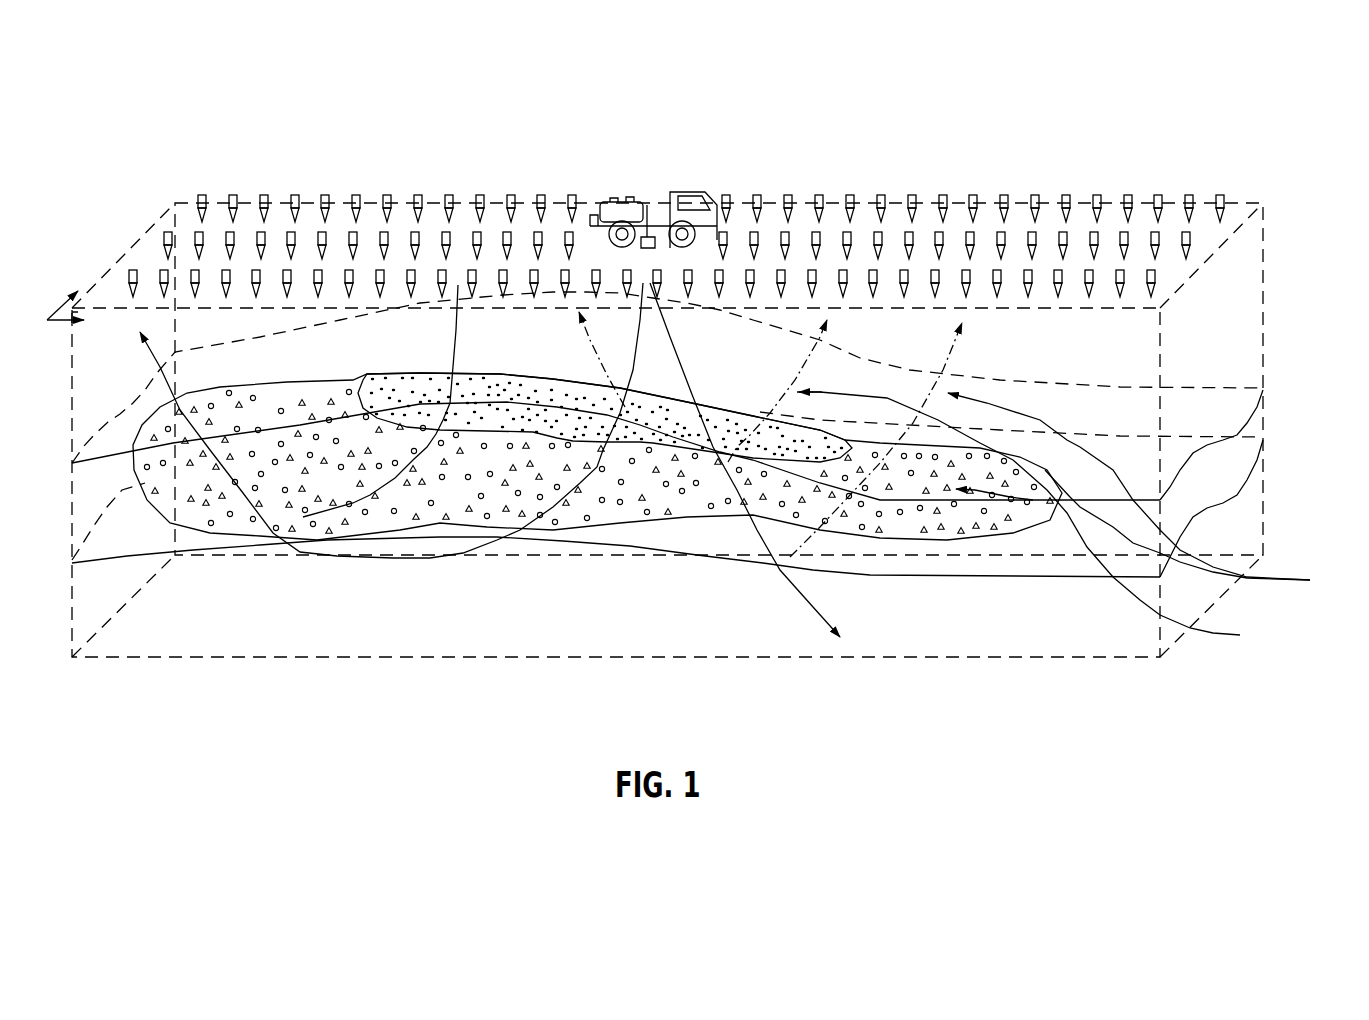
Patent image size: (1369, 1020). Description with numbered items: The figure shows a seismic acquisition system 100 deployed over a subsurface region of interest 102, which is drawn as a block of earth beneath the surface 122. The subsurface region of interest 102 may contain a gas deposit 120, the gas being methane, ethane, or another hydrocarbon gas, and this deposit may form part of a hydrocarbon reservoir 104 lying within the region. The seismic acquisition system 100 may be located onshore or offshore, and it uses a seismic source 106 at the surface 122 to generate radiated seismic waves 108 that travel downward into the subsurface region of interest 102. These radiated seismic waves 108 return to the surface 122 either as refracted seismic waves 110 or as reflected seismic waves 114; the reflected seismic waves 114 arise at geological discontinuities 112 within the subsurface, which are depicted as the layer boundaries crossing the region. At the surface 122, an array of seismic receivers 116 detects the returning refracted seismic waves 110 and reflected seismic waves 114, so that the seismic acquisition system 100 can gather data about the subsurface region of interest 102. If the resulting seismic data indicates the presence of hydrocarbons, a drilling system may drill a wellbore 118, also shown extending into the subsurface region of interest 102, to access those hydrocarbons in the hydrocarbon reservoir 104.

The seismic acquisition system 100 is at (1128, 99).
The subsurface region of interest 102 is at (991, 662).
The hydrocarbon reservoir 104 is at (679, 473).
The seismic source 106 is at (654, 193).
The radiated seismic waves 108 is at (490, 506).
The refracted seismic waves 110 is at (597, 551).
The geological discontinuities 112 is at (616, 566).
The reflected seismic waves 114 is at (1152, 495).
The seismic receivers 116 is at (976, 193).
The wellbore 118 is at (402, 507).
The gas deposit 120 is at (295, 195).
The surface 122 is at (162, 226).